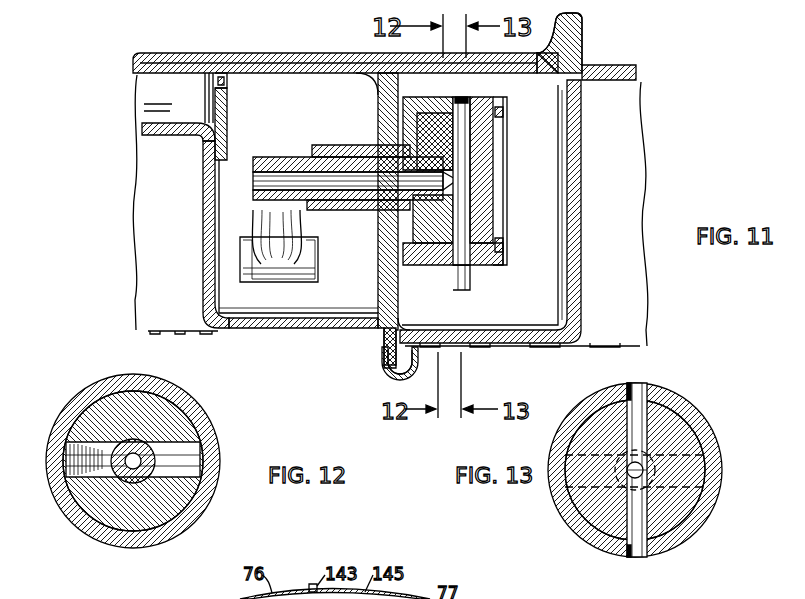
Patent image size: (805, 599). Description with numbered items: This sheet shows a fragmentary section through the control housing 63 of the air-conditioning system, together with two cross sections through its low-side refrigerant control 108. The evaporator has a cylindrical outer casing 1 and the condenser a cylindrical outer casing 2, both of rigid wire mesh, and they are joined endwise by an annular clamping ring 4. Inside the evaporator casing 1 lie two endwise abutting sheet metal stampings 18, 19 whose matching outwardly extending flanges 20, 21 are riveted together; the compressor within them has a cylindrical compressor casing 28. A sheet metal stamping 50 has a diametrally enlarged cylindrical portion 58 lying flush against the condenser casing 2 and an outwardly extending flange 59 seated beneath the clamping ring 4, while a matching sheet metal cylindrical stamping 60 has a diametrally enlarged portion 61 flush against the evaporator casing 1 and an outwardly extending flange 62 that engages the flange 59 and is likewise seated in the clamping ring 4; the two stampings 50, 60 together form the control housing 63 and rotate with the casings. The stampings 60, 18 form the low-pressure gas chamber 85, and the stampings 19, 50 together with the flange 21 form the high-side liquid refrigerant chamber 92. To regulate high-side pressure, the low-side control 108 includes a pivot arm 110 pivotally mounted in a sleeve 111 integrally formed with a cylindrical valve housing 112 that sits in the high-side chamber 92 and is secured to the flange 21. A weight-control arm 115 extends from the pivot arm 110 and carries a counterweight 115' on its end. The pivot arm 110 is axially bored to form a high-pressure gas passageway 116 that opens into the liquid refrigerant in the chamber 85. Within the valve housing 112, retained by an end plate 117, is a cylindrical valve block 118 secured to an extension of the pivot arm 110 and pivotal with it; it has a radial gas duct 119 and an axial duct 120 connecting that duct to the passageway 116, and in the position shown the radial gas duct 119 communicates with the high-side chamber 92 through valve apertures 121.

In FIG. 11, the cylindrical outer casing 1 is at (148, 331).
In FIG. 11, the cylindrical outer casing 2 is at (620, 344).
In FIG. 11, the annular clamping ring 4 is at (407, 378).
In FIG. 11, the sheet metal stamping 18 is at (363, 318).
In FIG. 11, the sheet metal stamping 19 is at (467, 322).
In FIG. 11, the outwardly extending flange 20 is at (265, 66).
In FIG. 11, the outwardly extending flange 21 is at (572, 50).
In FIG. 11, the cylindrical compressor casing 28 is at (180, 53).
In FIG. 11, the sheet metal stamping 50 is at (638, 74).
In FIG. 11, the diametrally enlarged cylindrical portion 58 is at (579, 222).
In FIG. 11, the outwardly extending flange 59 is at (382, 357).
In FIG. 11, the sheet metal cylindrical stamping 60 is at (207, 267).
In FIG. 11, the diametrally enlarged portion 61 is at (313, 303).
In FIG. 11, the outwardly extending flange 62 is at (387, 370).
In FIG. 11, the control housing 63 is at (330, 97).
In FIG. 11, the low-pressure gas chamber 85 is at (240, 78).
In FIG. 11, the high-side liquid refrigerant chamber 92 is at (550, 300).
In FIG. 11, the low-side refrigerant control 108 is at (258, 292).
In FIG. 11, the pivot arm 110 is at (353, 144).
In FIG. 12, the pivot arm 110 is at (157, 459).
In FIG. 11, the sleeve 111 is at (340, 194).
In FIG. 11, the cylindrical valve housing 112 is at (502, 265).
In FIG. 12, the cylindrical valve housing 112 is at (107, 378).
In FIG. 13, the cylindrical valve housing 112 is at (687, 408).
In FIG. 11, the weight-control arm 115 is at (232, 228).
In FIG. 11, the counterweight 115' is at (305, 259).
In FIG. 11, the high-pressure gas passageway 116 is at (293, 178).
In FIG. 12, the high-pressure gas passageway 116 is at (118, 460).
In FIG. 13, the high-pressure gas passageway 116 is at (643, 470).
In FIG. 11, the end plate 117 is at (493, 157).
In FIG. 11, the cylindrical valve block 118 is at (490, 213).
In FIG. 12, the cylindrical valve block 118 is at (172, 408).
In FIG. 13, the cylindrical valve block 118 is at (685, 437).
In FIG. 11, the radial gas duct 119 is at (465, 137).
In FIG. 13, the radial gas duct 119 is at (640, 407).
In FIG. 11, the axial duct 120 is at (448, 177).
In FIG. 13, the axial duct 120 is at (627, 473).
In FIG. 11, the valve apertures 121 is at (467, 100).
In FIG. 13, the valve apertures 121 is at (638, 412).